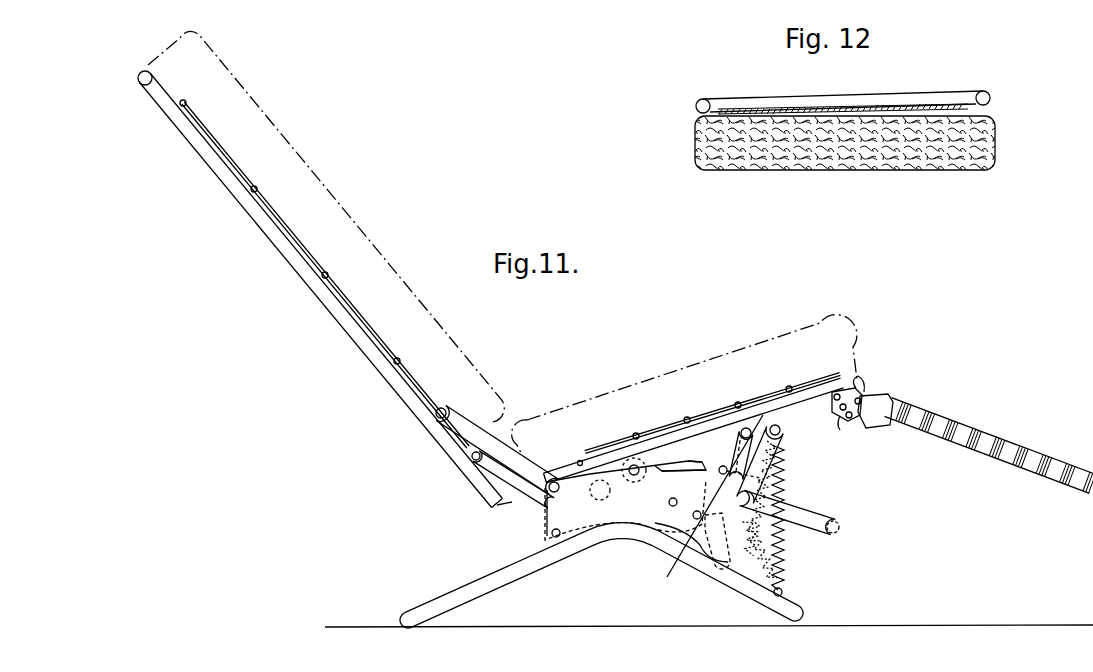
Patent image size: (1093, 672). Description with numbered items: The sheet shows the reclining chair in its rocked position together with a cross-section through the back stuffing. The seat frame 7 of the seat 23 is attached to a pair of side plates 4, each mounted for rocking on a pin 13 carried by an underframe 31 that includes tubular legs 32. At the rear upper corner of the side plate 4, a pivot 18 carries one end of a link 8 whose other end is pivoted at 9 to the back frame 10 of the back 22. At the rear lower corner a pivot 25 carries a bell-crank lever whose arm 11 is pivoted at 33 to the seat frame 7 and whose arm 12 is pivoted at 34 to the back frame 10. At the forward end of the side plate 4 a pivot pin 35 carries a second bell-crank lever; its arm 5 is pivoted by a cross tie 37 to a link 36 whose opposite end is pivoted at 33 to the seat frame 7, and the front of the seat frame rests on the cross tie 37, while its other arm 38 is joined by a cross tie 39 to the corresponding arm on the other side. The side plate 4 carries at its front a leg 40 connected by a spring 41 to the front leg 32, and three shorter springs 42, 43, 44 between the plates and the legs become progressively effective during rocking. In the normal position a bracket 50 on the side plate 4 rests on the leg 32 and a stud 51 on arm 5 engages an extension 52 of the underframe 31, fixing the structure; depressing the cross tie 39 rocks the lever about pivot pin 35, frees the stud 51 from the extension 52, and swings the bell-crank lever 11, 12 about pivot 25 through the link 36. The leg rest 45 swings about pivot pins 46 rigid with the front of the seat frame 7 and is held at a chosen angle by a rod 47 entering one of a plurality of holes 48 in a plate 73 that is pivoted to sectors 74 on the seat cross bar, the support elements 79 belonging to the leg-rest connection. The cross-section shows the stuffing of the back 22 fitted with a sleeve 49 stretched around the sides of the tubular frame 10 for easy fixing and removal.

In FIG. 11, the side plate 4 is at (625, 499).
In FIG. 11, the arm of bell-crank lever 5 is at (745, 428).
In FIG. 11, the seat frame 7 is at (783, 400).
In FIG. 11, the link 8 is at (494, 448).
In FIG. 11, the pivot 9 is at (436, 415).
In FIG. 11, the back frame 10 is at (287, 237).
In FIG. 12, the back frame 10 is at (694, 106).
In FIG. 11, the arm of bell-crank lever 11 is at (546, 528).
In FIG. 11, the arm of bell-crank lever 12 is at (513, 503).
In FIG. 11, the pin 13 is at (634, 465).
In FIG. 11, the pivot 18 is at (554, 482).
In FIG. 11, the back 22 is at (318, 183).
In FIG. 12, the back 22 is at (888, 166).
In FIG. 11, the seat 23 is at (717, 360).
In FIG. 11, the pivot 25 is at (550, 537).
In FIG. 11, the underframe 31 is at (613, 539).
In FIG. 11, the tubular legs 32 is at (505, 577).
In FIG. 11, the pivot 33 is at (580, 460).
In FIG. 11, the pivot 34 is at (470, 458).
In FIG. 11, the pivot pin 35 is at (710, 506).
In FIG. 11, the link 36 is at (701, 458).
In FIG. 11, the cross tie 37 is at (745, 428).
In FIG. 11, the arm of bell-crank lever 38 is at (814, 522).
In FIG. 11, the cross tie 39 is at (840, 527).
In FIG. 11, the leg 40 is at (781, 433).
In FIG. 11, the spring 41 is at (785, 477).
In FIG. 11, the spring 42 is at (780, 457).
In FIG. 11, the spring 43 is at (754, 550).
In FIG. 11, the spring 44 is at (690, 532).
In FIG. 11, the leg rest 45 is at (992, 438).
In FIG. 11, the pivot pins 46 is at (838, 410).
In FIG. 11, the rod 47 is at (863, 400).
In FIG. 11, the holes 48 is at (836, 392).
In FIG. 12, the sleeve 49 is at (717, 104).
In FIG. 11, the bracket 50 is at (692, 547).
In FIG. 11, the stud 51 is at (735, 483).
In FIG. 11, the extension 52 is at (677, 458).
In FIG. 11, the plate 73 is at (883, 420).
In FIG. 11, the sectors 74 is at (836, 431).
In FIG. 11, the support elements 79 is at (859, 378).